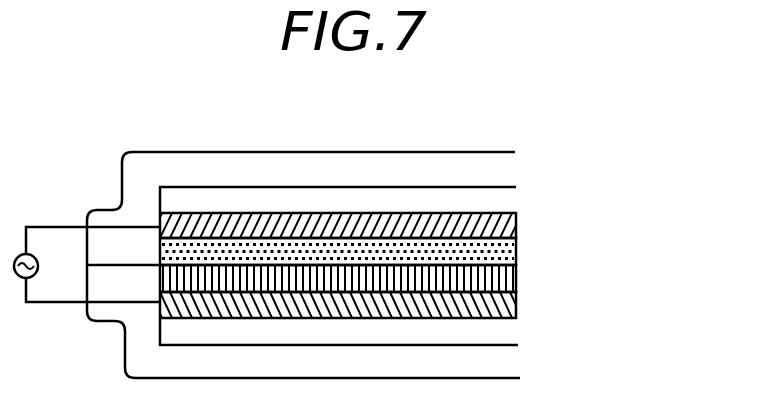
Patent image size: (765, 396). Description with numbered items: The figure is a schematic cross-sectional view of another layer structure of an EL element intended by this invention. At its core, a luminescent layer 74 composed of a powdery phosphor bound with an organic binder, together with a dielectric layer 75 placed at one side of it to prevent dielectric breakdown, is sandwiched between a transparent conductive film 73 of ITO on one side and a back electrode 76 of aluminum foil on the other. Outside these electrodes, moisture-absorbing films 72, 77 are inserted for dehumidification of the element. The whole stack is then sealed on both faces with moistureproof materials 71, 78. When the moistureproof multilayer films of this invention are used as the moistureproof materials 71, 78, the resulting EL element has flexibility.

The moistureproof material 71 is at (508, 165).
The moisture-absorbing film 72 is at (508, 197).
The transparent conductive film 73 is at (516, 217).
The luminescent layer 74 is at (516, 247).
The dielectric layer 75 is at (516, 275).
The back electrode 76 is at (516, 303).
The moisture-absorbing film 77 is at (513, 329).
The moistureproof material 78 is at (513, 360).